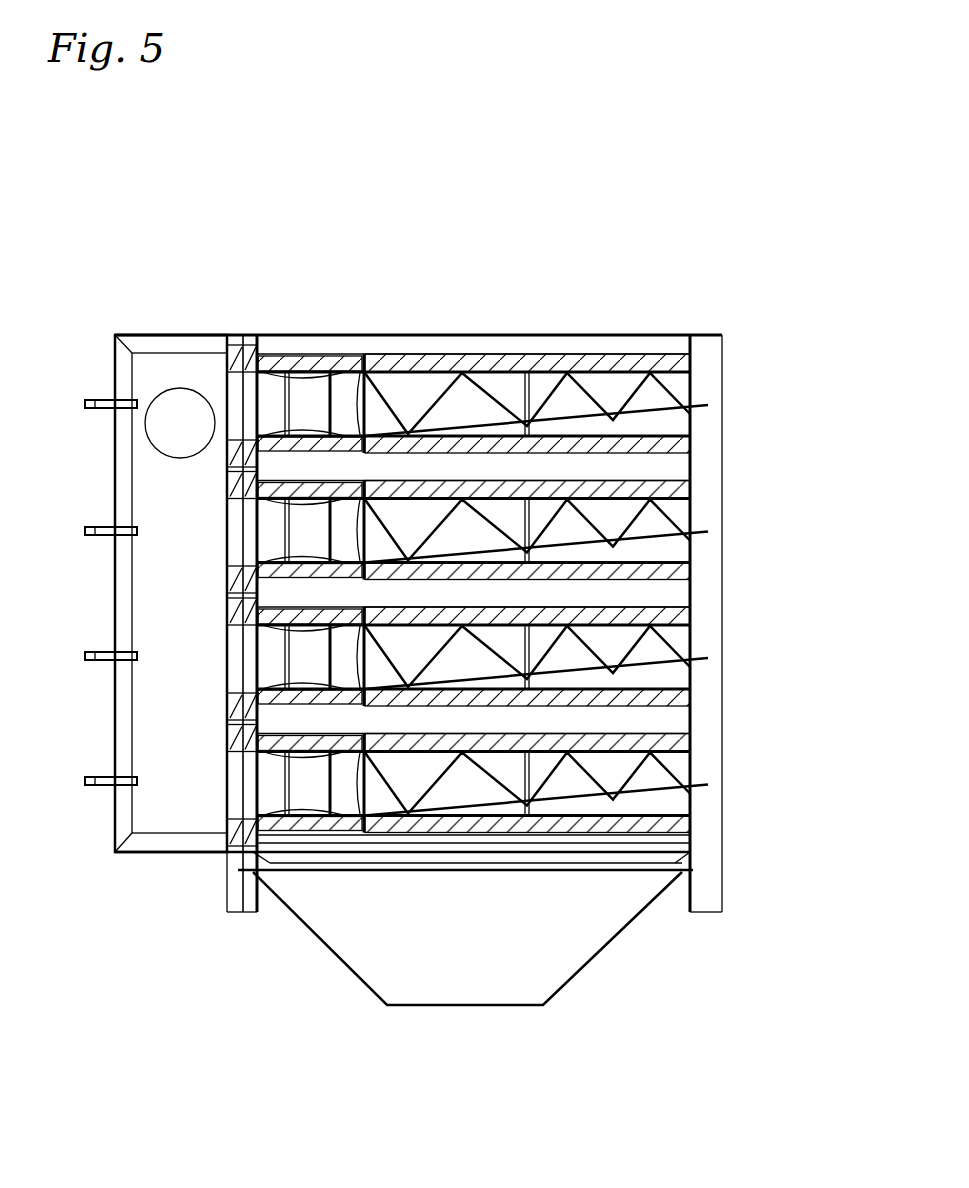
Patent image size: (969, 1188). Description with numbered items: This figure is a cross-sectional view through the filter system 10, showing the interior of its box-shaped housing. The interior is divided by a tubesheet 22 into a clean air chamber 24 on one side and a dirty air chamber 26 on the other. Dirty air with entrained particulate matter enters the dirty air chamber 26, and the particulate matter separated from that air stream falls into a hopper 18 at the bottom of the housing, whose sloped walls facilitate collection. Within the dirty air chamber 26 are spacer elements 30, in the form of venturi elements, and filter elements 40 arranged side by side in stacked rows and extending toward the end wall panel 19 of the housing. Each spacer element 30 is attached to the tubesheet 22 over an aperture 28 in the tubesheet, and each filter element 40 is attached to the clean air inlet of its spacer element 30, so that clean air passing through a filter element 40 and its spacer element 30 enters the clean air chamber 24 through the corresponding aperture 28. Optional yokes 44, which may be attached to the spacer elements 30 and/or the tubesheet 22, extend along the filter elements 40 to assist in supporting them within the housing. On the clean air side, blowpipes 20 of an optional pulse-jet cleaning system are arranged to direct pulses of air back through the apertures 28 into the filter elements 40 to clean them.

The filter system 10 is at (572, 228).
The hopper 18 is at (573, 940).
The end wall panel 19 is at (713, 337).
The blowpipes 20 is at (88, 400).
The tubesheet 22 is at (263, 352).
The clean air chamber 24 is at (163, 511).
The dirty air chamber 26 is at (638, 597).
The apertures 28 is at (250, 413).
The spacer elements 30 is at (302, 490).
The filter elements 40 is at (695, 356).
The yokes 44 is at (658, 412).